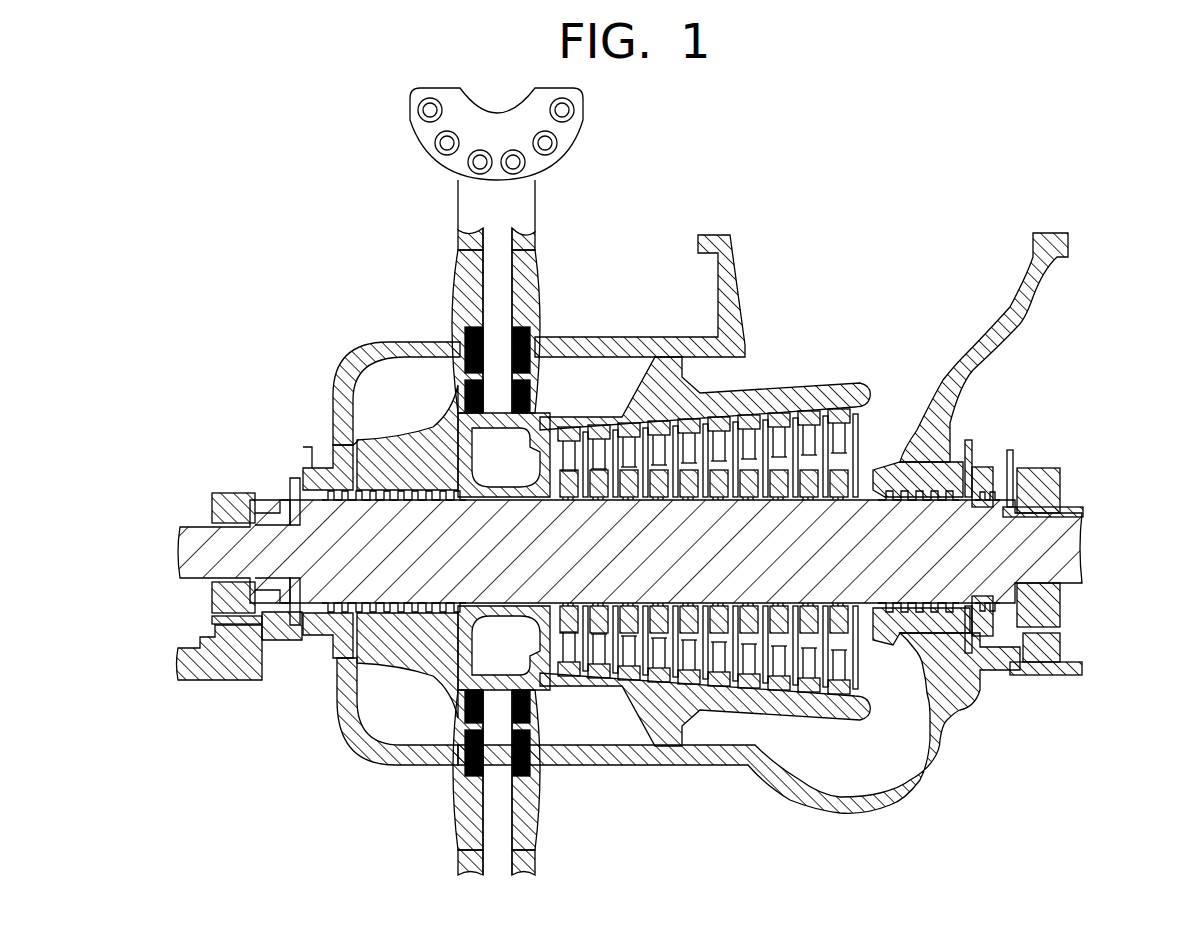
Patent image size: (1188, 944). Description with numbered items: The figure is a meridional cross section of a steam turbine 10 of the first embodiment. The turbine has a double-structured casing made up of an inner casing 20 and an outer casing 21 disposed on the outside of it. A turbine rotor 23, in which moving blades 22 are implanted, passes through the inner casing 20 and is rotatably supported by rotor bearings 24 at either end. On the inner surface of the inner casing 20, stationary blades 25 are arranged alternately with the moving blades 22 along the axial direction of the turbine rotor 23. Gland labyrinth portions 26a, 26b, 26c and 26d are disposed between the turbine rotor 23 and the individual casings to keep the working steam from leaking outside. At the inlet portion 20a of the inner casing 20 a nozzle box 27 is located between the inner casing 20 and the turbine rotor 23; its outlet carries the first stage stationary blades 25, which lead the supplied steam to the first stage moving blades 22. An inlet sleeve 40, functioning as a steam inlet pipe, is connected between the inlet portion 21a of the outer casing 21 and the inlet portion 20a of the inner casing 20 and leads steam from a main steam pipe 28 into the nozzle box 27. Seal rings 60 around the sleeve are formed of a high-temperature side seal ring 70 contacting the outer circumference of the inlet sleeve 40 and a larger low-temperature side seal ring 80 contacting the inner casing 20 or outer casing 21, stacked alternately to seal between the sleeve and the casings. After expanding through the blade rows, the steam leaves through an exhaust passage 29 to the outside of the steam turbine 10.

The steam turbine 10 is at (1113, 134).
The inner casing 20 is at (780, 392).
The inlet portion of the inner casing 20a is at (448, 395).
The outer casing 21 is at (648, 343).
The inlet portion of the outer casing 21a is at (440, 255).
The moving blades 22 is at (575, 430).
The turbine rotor 23 is at (968, 442).
The rotor bearings 24 is at (228, 495).
The stationary blades 25 is at (545, 440).
The gland labyrinth portion 26a is at (395, 490).
The gland labyrinth portion 26b is at (335, 490).
The gland labyrinth portion 26c is at (908, 470).
The gland labyrinth portion 26d is at (1036, 440).
The nozzle box 27 is at (496, 500).
The main steam pipe 28 is at (525, 206).
The exhaust passage 29 is at (1005, 342).
The inlet sleeve 40 is at (498, 338).
The seal rings 60 is at (452, 318).
The high-temperature side seal ring 70 is at (468, 350).
The low-temperature side seal ring 80 is at (450, 352).